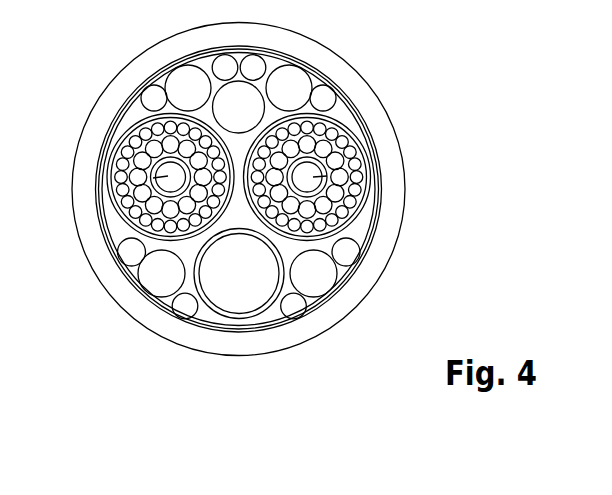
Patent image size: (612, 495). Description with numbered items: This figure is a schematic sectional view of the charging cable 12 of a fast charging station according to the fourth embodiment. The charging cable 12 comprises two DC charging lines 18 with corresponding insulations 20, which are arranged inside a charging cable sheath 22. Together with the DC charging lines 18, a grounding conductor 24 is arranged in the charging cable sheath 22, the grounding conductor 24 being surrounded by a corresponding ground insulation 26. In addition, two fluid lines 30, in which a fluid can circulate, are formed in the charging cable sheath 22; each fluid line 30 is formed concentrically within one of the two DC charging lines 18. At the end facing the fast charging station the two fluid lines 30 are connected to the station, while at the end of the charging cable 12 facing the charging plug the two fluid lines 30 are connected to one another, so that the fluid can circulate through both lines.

The charging cable 12 is at (72, 74).
The DC charging line 18 is at (110, 130).
The insulation 20 is at (143, 92).
The charging cable sheath 22 is at (343, 303).
The grounding conductor 24 is at (223, 290).
The ground insulation 26 is at (182, 272).
The fluid line 30 is at (120, 193).